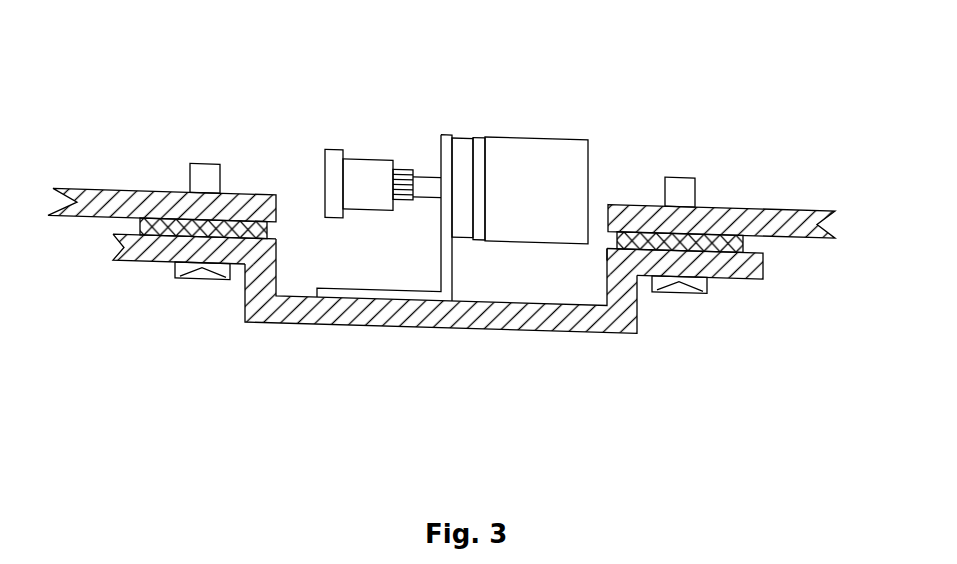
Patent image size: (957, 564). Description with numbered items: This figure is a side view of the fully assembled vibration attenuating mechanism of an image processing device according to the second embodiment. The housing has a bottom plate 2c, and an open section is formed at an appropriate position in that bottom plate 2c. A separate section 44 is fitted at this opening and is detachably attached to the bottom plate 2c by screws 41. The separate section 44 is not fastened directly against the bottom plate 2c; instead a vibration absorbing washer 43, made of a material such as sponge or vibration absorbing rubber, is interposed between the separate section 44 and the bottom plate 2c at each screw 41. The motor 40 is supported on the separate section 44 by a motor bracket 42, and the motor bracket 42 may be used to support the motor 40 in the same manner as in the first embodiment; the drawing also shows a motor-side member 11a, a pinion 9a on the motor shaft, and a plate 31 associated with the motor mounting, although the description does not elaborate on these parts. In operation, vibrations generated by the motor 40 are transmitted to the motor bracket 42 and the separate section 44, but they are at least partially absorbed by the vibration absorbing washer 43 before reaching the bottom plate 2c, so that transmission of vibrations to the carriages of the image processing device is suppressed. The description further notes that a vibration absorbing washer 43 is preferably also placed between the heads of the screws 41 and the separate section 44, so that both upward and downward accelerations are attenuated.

The bottom plate 2c is at (441, 213).
The pinion gear 9a is at (417, 184).
The motor 11a is at (359, 184).
The mounting plate 31 is at (395, 216).
The motor 40 is at (536, 190).
The screws 41 is at (441, 228).
The motor bracket 42 is at (479, 189).
The vibration absorbing washer 43 is at (438, 256).
The separate section 44 is at (441, 285).